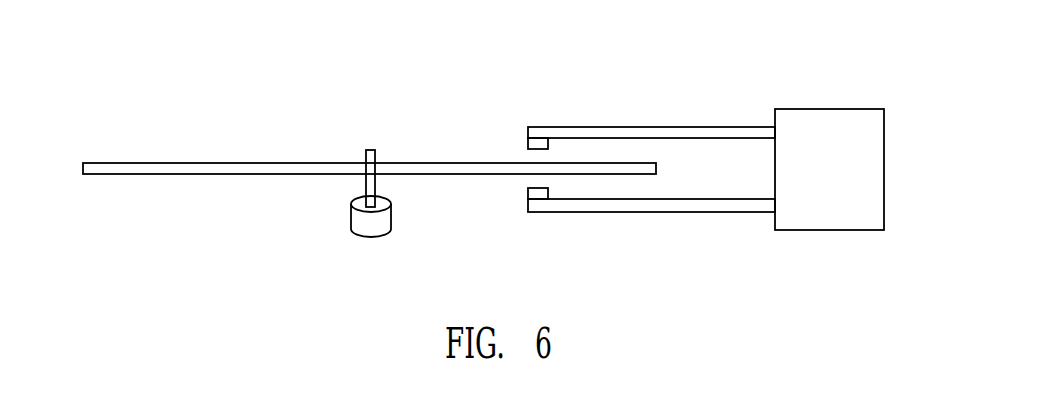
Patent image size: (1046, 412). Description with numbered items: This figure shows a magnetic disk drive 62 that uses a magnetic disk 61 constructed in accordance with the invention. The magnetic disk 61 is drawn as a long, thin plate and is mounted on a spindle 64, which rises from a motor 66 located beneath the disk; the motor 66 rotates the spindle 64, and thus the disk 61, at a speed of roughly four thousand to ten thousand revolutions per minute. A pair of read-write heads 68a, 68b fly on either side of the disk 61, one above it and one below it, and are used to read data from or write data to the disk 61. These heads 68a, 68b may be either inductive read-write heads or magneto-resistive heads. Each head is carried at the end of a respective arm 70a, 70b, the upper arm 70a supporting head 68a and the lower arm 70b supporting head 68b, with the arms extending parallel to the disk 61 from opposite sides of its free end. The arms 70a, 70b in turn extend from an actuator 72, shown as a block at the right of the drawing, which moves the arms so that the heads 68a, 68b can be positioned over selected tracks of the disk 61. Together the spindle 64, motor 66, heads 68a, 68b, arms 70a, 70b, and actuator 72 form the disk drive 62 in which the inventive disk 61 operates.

The magnetic disk drive 62 is at (496, 68).
The magnetic disk 61 is at (142, 175).
The spindle 64 is at (366, 150).
The motor 66 is at (352, 219).
The read-write head 68a is at (528, 146).
The read-write head 68b is at (528, 191).
The arm 70a is at (584, 128).
The arm 70b is at (588, 213).
The actuator 72 is at (838, 219).